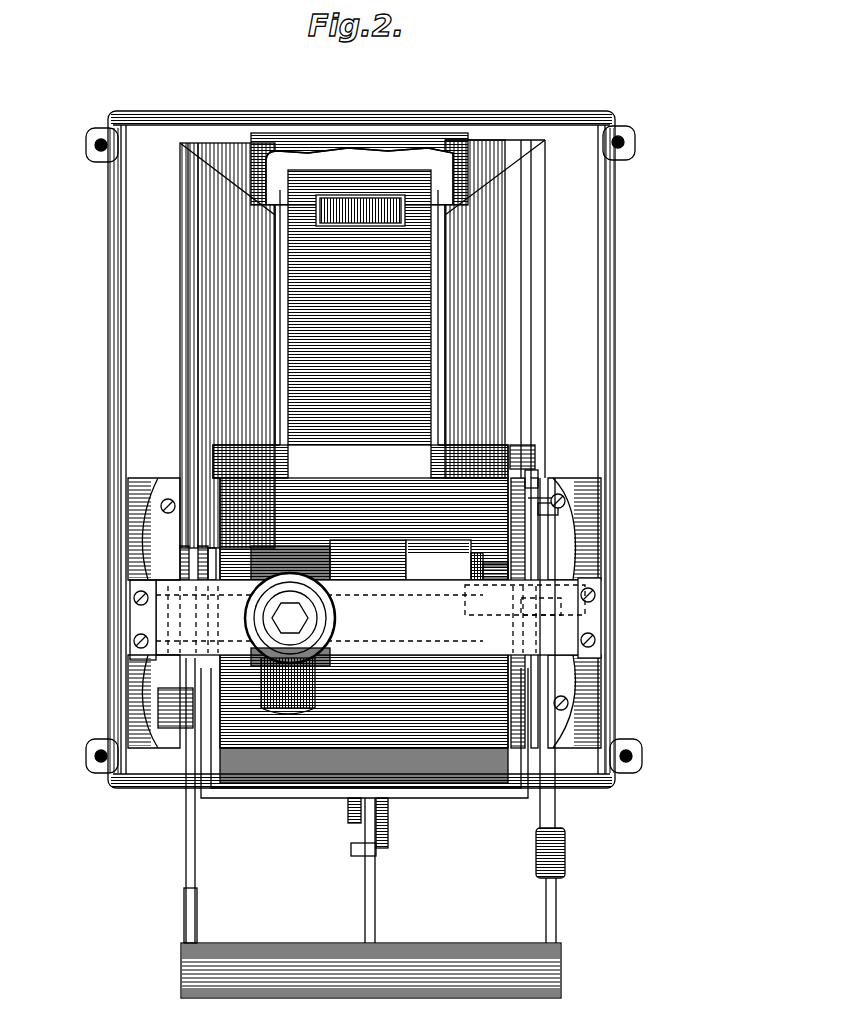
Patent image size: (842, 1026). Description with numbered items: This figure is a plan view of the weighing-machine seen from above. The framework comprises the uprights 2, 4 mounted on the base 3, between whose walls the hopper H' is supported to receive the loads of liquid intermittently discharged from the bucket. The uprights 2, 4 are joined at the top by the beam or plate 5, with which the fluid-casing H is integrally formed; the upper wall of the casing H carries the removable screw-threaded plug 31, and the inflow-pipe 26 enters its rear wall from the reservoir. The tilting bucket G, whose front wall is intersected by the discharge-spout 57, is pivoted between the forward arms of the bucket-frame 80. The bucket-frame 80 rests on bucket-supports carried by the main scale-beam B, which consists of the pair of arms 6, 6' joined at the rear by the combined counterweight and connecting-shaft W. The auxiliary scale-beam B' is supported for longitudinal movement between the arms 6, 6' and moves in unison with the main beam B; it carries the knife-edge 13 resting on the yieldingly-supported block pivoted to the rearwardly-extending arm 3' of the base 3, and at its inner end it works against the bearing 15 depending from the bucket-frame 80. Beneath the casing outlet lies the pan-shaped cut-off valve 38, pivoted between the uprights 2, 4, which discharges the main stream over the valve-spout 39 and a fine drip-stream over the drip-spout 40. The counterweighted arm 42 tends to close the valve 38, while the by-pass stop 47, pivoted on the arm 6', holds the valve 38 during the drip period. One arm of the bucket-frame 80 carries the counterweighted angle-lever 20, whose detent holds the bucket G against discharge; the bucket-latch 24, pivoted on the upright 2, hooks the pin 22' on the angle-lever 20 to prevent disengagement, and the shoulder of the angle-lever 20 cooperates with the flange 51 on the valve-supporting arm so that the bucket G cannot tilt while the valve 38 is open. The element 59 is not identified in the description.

The base 3 is at (615, 449).
The hopper H' is at (206, 345).
The discharge-spout 57 is at (427, 265).
The bucket G is at (492, 445).
The angle-lever 20 is at (522, 470).
The flange 51 is at (505, 510).
The pin 22' is at (562, 483).
The bucket-latch 24 is at (593, 527).
The upright 2 is at (598, 667).
The by-pass stop 47 is at (208, 552).
The valve 38 is at (345, 550).
The main-stream valve-spout 39 is at (410, 540).
The drip-spout 40 is at (465, 550).
The piece 59 is at (490, 560).
The beam or plate 5 is at (365, 619).
The fluid-casing H is at (303, 618).
The screw-threaded plug 31 is at (303, 614).
The inflow conduit or pipe 26 is at (282, 702).
The upright 4 is at (165, 660).
The counterweighted arm 42 is at (152, 690).
The bucket-frame 80 is at (452, 782).
The arm 6' is at (170, 800).
The main scale-beam B is at (198, 915).
The auxiliary scale-beam B' is at (385, 870).
The bearing 15 is at (348, 798).
The rearwardly-extending arm 3' is at (396, 823).
The pivot or knife-edge 13 is at (345, 845).
The arm 6 is at (556, 710).
The counterweight and connecting-shaft W is at (440, 946).